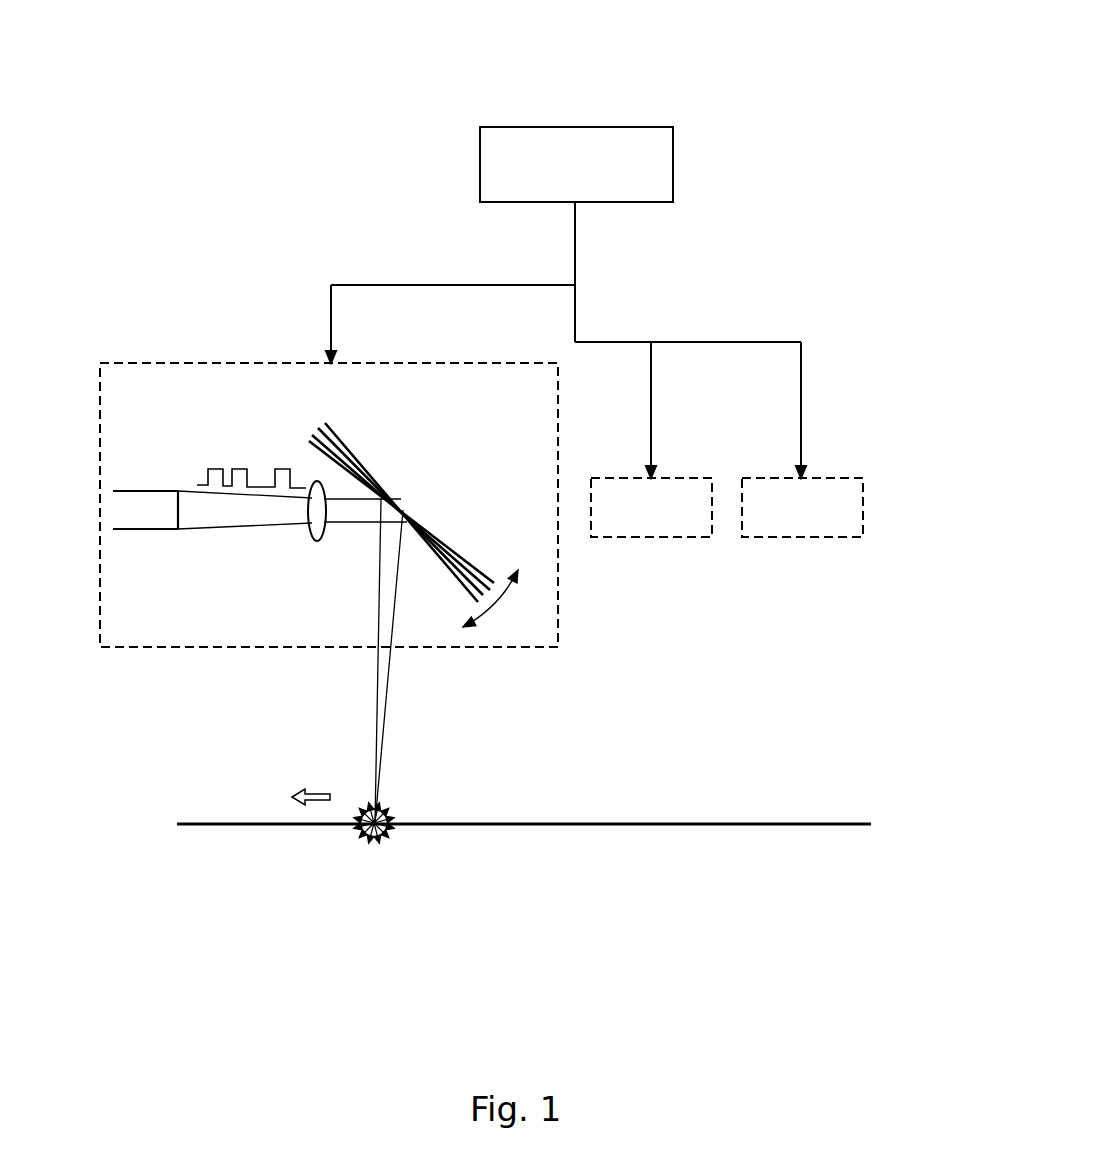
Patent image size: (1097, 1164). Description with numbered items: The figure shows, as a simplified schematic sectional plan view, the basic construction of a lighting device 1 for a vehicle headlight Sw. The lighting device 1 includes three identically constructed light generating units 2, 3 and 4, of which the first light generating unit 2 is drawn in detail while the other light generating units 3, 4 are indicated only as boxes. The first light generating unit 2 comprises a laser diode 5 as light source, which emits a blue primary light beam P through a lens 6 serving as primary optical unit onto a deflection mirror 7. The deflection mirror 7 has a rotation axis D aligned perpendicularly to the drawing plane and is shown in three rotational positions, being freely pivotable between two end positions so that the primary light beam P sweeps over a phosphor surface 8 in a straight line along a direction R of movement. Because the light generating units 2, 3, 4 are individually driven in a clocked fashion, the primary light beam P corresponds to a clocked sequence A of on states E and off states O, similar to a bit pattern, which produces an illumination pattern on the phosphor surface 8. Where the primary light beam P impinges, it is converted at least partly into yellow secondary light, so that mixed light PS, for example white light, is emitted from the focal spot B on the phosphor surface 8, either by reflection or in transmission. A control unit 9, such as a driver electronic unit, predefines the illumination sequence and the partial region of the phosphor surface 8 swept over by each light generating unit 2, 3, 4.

The lighting device 1 is at (280, 163).
The first light generating unit 2 is at (178, 363).
The light generating unit 3 is at (646, 537).
The light generating unit 4 is at (807, 537).
The laser diode 5 is at (136, 509).
The lens 6 is at (317, 541).
The deflection mirror 7 is at (482, 568).
The phosphor surface 8 is at (682, 824).
The control unit 9 is at (673, 164).
The vehicle headlight Sw is at (682, 100).
The primary light beam P is at (193, 502).
The temporally clocked sequence A is at (216, 463).
The on states E is at (242, 463).
The off states O is at (263, 463).
The rotation axis D is at (402, 509).
The mixed light PS is at (363, 813).
The direction of movement R is at (322, 805).
The focal spot B is at (398, 852).